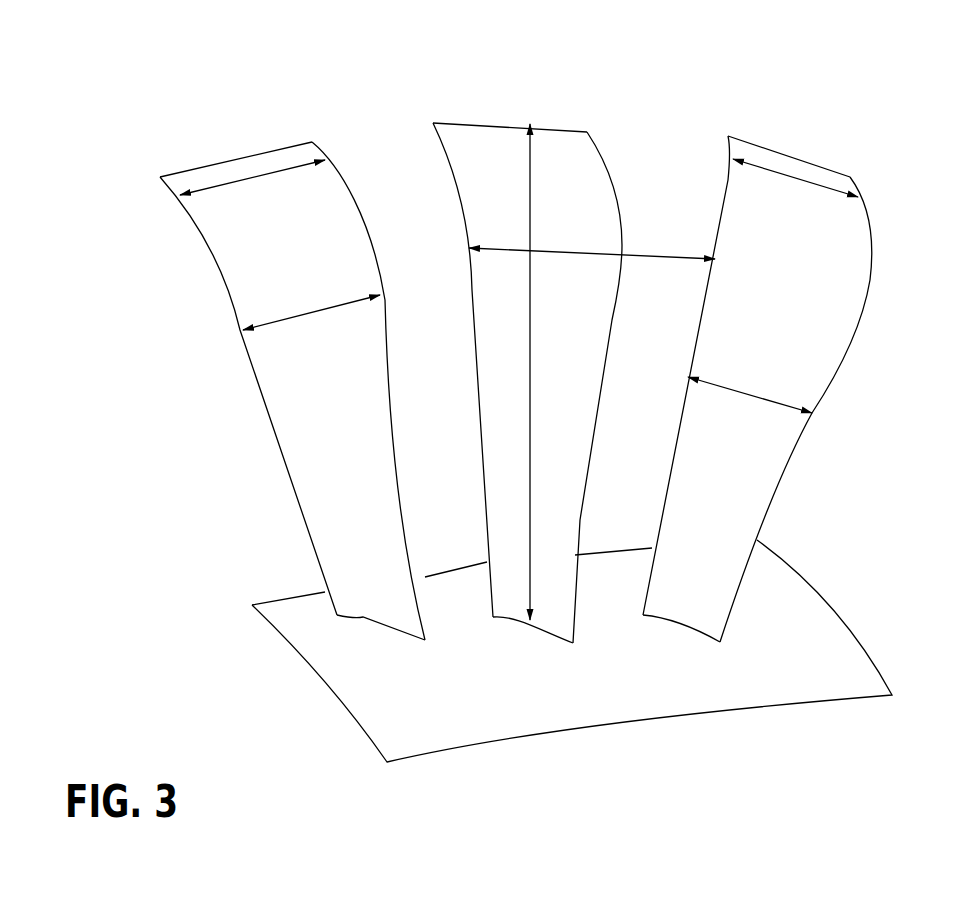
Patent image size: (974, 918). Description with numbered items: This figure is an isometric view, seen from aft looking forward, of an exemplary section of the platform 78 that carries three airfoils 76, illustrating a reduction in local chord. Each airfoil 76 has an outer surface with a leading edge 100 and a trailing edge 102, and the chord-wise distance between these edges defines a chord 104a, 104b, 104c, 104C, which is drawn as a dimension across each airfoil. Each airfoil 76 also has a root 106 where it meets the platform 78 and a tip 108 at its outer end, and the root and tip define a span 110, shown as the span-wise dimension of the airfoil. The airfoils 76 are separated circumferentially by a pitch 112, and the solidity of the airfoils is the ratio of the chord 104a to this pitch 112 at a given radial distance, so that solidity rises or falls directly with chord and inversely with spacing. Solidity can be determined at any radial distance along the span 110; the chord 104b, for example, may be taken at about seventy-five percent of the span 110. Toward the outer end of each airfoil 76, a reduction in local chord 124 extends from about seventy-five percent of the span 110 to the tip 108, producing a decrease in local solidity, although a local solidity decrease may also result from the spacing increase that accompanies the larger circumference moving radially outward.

The airfoil 76 is at (275, 370).
The platform 78 is at (303, 623).
The leading edge 100 is at (268, 428).
The trailing edge 102 is at (772, 482).
The chord 104a is at (757, 398).
The chord 104b is at (295, 310).
The chord 104c is at (225, 182).
The chord 104C is at (782, 172).
The root 106 is at (402, 622).
The tip 108 is at (248, 155).
The span 110 is at (528, 545).
The pitch 112 is at (658, 258).
The reduction in local chord 124 is at (347, 177).